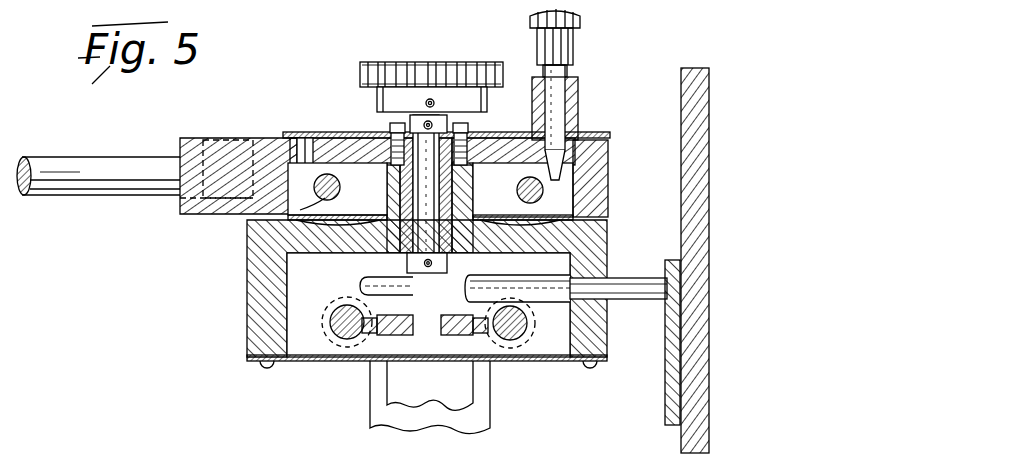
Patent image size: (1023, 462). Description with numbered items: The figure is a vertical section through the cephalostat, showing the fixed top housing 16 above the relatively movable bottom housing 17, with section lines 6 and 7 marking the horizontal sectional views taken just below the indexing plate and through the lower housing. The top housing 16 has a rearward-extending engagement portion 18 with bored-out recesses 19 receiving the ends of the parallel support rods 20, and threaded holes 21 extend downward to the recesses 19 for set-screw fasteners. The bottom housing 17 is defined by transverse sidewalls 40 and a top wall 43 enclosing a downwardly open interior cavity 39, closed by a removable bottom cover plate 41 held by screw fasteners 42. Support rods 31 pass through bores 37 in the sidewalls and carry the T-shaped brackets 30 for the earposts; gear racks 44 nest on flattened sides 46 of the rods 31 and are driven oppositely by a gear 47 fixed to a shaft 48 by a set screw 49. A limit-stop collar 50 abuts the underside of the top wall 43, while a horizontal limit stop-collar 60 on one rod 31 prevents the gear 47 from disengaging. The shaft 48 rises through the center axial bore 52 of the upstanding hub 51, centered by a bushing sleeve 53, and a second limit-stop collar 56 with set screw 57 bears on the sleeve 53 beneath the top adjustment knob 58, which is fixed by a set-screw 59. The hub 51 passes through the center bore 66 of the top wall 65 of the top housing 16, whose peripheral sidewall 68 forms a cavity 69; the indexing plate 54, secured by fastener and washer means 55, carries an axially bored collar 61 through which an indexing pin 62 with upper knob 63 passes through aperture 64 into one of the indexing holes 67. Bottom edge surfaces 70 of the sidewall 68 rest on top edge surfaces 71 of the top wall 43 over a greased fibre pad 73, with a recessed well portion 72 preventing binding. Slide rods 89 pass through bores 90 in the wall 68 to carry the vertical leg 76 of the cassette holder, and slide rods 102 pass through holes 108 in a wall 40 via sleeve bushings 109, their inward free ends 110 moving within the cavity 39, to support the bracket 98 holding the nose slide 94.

The section line 6- 6 is at (145, 136).
The section line 7- 7 is at (240, 272).
The top housing 16 is at (172, 206).
The bottom housing 17 is at (218, 334).
The rearward-extending engagement portion 18 is at (195, 175).
The bored-out recesses 19 is at (182, 226).
The support rods 20 is at (58, 196).
The threaded holes 21 is at (234, 138).
The T-shaped brackets 30 is at (388, 386).
The support rods 31 is at (346, 340).
The bores 37 is at (330, 336).
The interior cavity 39 is at (300, 310).
The transverse sidewalls 40 is at (262, 306).
The bottom cover plate 41 is at (566, 360).
The screw fasteners 42 is at (266, 366).
The top wall 43 is at (300, 233).
The gear racks 44 is at (384, 334).
The flattened sides 46 is at (330, 314).
The gear 47 is at (408, 365).
The shaft 48 is at (440, 282).
The set screw 49 is at (428, 336).
The limit-stop collar 50 is at (407, 263).
The hub 51 is at (387, 192).
The center axial bore 52 is at (412, 200).
The bushing sleeve 53 is at (466, 178).
The indexing plate 54 is at (315, 132).
The machine screw fastener and washer means 55 is at (470, 126).
The second limit-stop collar 56 is at (410, 118).
The set screw 57 is at (433, 120).
The top adjustment knob 58 is at (455, 70).
The set-screw 59 is at (426, 103).
The horizontal limit stop-collar 60 is at (512, 342).
The axially bored collar 61 is at (575, 86).
The indexing pin 62 is at (578, 92).
The upper knob 63 is at (582, 20).
The aperture 64 is at (566, 150).
The top wall 65 is at (340, 148).
The center bore 66 is at (338, 186).
The indexing holes 67 is at (292, 136).
The peripheral sidewall 68 is at (268, 162).
The cavity 69 is at (320, 207).
The bottom horizontal edge surfaces 70 is at (590, 196).
The top horizontal edge surfaces 71 is at (595, 235).
The recessed well portion 72 is at (428, 305).
The greased fibre pad 73 is at (580, 218).
The vertical leg 76 is at (490, 428).
The slide rods 89 is at (408, 201).
The bores 90 is at (318, 182).
The nose slide 94 is at (710, 440).
The bracket 98 is at (680, 357).
The slide rods 102 is at (632, 296).
The holes 108 is at (600, 264).
The sleeve bushings 109 is at (555, 270).
The inward free ends 110 is at (366, 280).